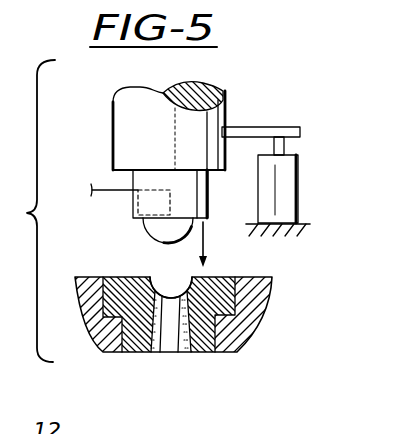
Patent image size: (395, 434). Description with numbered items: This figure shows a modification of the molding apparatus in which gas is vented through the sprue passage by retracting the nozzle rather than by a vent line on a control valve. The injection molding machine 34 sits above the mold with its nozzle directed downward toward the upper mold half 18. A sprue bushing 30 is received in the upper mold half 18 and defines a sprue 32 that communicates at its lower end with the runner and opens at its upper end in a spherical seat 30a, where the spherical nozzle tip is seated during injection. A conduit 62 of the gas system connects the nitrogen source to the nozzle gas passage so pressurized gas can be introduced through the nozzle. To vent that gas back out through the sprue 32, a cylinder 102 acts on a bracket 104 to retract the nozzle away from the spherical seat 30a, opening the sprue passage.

The injection molding machine 34 is at (113, 122).
The conduit 62 is at (95, 190).
The bracket 104 is at (270, 128).
The cylinder 102 is at (298, 188).
The upper mold half 18 is at (278, 308).
The sprue bushing 30 is at (220, 341).
The spherical seat 30a is at (157, 291).
The sprue 32 is at (165, 352).